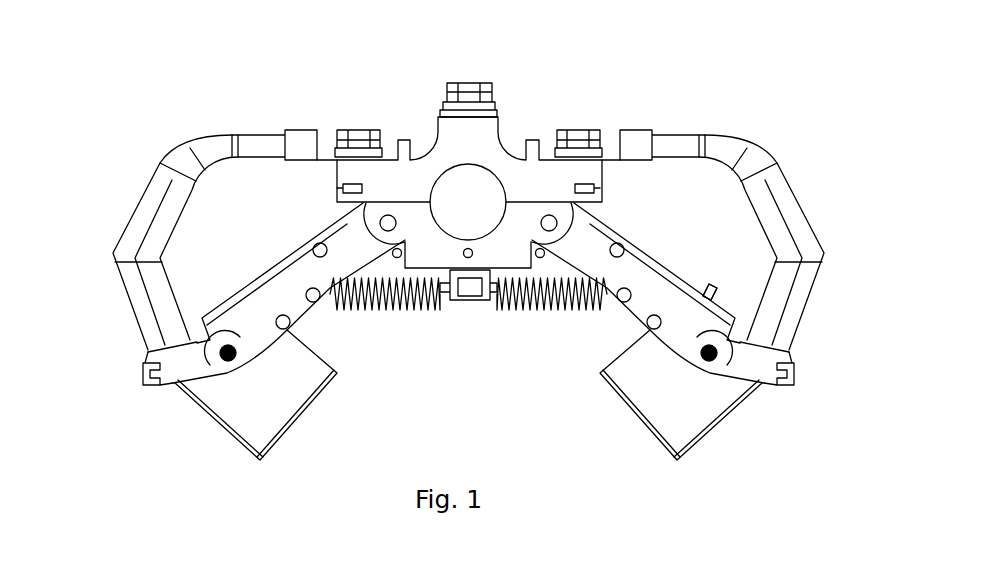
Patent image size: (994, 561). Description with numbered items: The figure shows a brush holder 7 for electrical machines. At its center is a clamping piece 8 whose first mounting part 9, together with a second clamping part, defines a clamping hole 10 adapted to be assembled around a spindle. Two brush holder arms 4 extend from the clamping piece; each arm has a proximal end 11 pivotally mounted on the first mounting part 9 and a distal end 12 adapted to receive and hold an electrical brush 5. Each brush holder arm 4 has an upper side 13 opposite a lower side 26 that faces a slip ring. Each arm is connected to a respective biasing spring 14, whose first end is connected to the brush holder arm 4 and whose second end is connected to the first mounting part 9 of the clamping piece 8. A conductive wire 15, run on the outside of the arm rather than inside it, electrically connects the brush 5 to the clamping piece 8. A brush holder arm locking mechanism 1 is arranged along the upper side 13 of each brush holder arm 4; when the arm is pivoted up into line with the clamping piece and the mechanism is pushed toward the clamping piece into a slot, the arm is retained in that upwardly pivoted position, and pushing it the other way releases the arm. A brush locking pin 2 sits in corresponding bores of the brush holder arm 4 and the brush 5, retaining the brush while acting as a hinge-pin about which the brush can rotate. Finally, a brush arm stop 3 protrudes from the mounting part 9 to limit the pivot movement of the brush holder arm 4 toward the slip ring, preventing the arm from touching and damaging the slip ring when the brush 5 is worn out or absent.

The brush holder arm locking mechanism 1 is at (716, 284).
The brush locking pin 2 is at (707, 378).
The brush arm stop 3 is at (541, 260).
The brush holder arm 4 is at (263, 253).
The electrical brush 5 is at (715, 432).
The brush holder 7 is at (113, 161).
The clamping piece 8 is at (397, 115).
The first mounting part 9 is at (426, 256).
The clamping hole 10 is at (471, 192).
The proximal end 11 is at (553, 243).
The distal end 12 is at (735, 376).
The upper side 13 is at (688, 273).
The biasing spring 14 is at (535, 311).
The conductive wire 15 is at (815, 221).
The lower side 26 is at (616, 324).